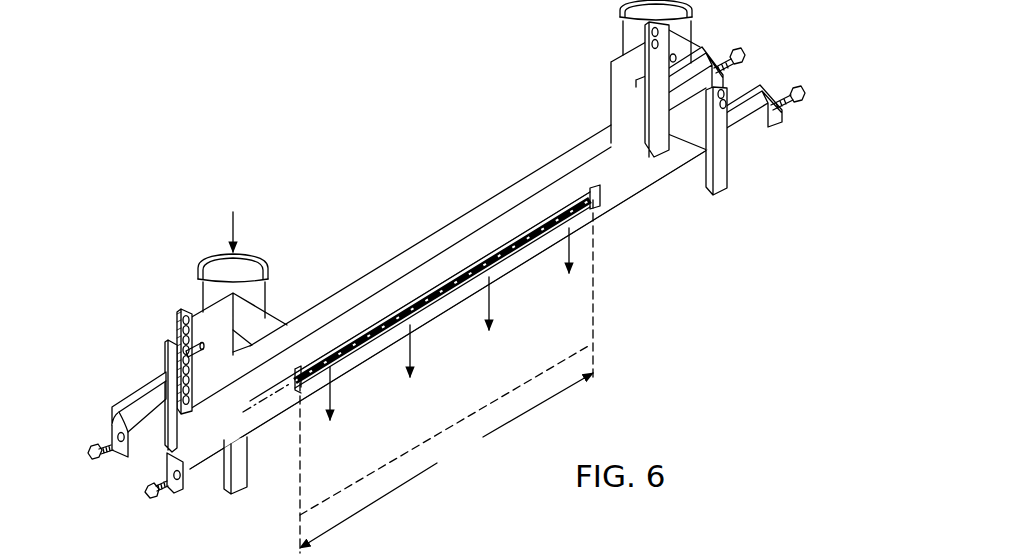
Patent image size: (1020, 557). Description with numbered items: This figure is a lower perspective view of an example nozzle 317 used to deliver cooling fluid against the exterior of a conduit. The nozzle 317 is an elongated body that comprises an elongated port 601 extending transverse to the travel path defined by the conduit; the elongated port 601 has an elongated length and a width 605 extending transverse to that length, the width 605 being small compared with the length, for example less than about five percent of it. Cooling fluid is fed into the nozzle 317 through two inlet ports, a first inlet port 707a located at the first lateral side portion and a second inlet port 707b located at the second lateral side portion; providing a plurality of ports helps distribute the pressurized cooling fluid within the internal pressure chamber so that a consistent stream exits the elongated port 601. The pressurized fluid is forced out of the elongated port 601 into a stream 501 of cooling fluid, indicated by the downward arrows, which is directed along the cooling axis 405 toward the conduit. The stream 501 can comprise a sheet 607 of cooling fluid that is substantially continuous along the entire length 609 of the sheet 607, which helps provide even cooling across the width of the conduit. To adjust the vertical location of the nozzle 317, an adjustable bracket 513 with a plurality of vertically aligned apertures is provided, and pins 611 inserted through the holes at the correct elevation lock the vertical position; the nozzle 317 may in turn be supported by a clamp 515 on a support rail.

The nozzle 317 is at (641, 208).
The cooling axis 405 is at (243, 416).
The stream of cooling fluid 501 is at (491, 300).
The adjustable bracket 513 is at (145, 330).
The clamp 515 is at (120, 397).
The elongated port 601 is at (438, 298).
The width 605 is at (563, 290).
The sheet of cooling fluid 607 is at (310, 492).
The length of the sheet 609 is at (446, 460).
The pins 611 is at (166, 369).
The first inlet port 707a is at (270, 302).
The second inlet port 707b is at (621, 34).